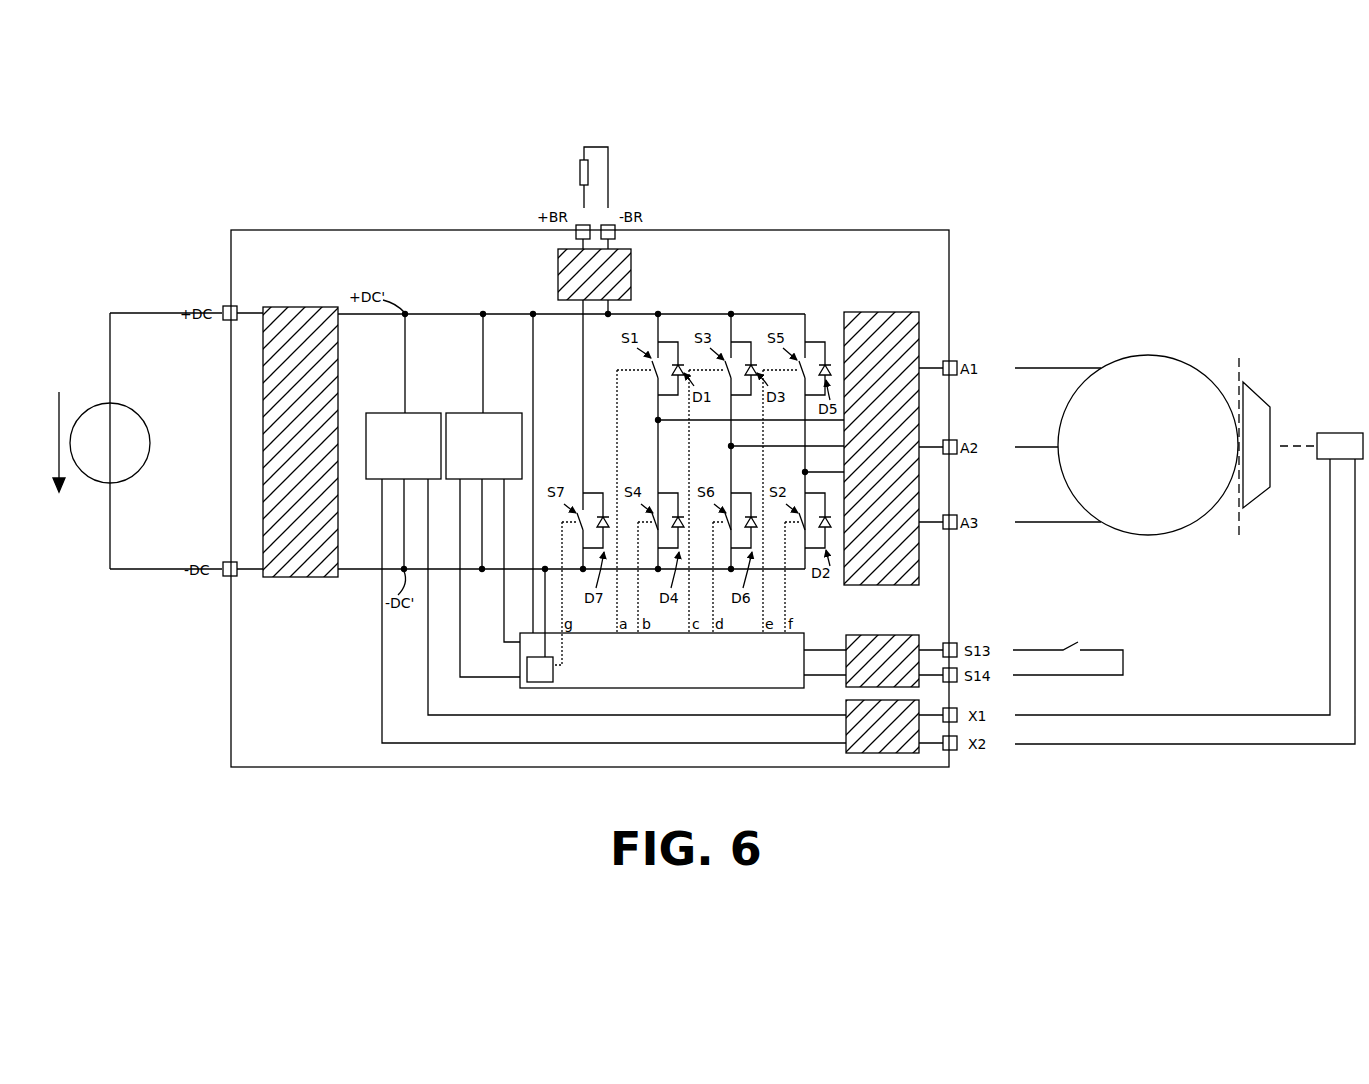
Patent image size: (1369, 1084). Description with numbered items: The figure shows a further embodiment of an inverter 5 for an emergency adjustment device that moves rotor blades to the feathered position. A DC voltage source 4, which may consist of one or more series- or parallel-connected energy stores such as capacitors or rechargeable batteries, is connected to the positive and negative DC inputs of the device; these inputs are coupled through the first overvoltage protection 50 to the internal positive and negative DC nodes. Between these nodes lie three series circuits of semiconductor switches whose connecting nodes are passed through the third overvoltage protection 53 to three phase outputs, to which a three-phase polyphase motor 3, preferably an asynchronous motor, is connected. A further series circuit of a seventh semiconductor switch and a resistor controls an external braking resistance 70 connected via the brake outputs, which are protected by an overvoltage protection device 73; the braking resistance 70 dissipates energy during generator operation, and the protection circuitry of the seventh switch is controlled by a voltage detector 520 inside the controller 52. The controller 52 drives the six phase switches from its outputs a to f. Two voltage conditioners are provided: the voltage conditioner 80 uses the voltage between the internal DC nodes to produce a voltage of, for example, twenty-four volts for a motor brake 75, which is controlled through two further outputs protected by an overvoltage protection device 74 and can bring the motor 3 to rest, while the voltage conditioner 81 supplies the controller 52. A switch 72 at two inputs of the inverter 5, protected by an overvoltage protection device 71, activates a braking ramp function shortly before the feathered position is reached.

The polyphase motor 3 is at (1150, 354).
The DC voltage source 4 is at (132, 410).
The inverter 5 is at (272, 230).
The first overvoltage protection 50 is at (302, 578).
The controller 52 is at (683, 501).
The voltage detector 520 is at (556, 676).
The third overvoltage protection 53 is at (870, 312).
The braking resistance 70 is at (578, 181).
The overvoltage protection device 71 is at (870, 635).
The switch 72 is at (1062, 637).
The overvoltage protection device 73 is at (631, 272).
The overvoltage protection device 74 is at (880, 753).
The motor brake 75 is at (1308, 378).
The voltage conditioner 80 is at (420, 413).
The voltage conditioner 81 is at (500, 413).